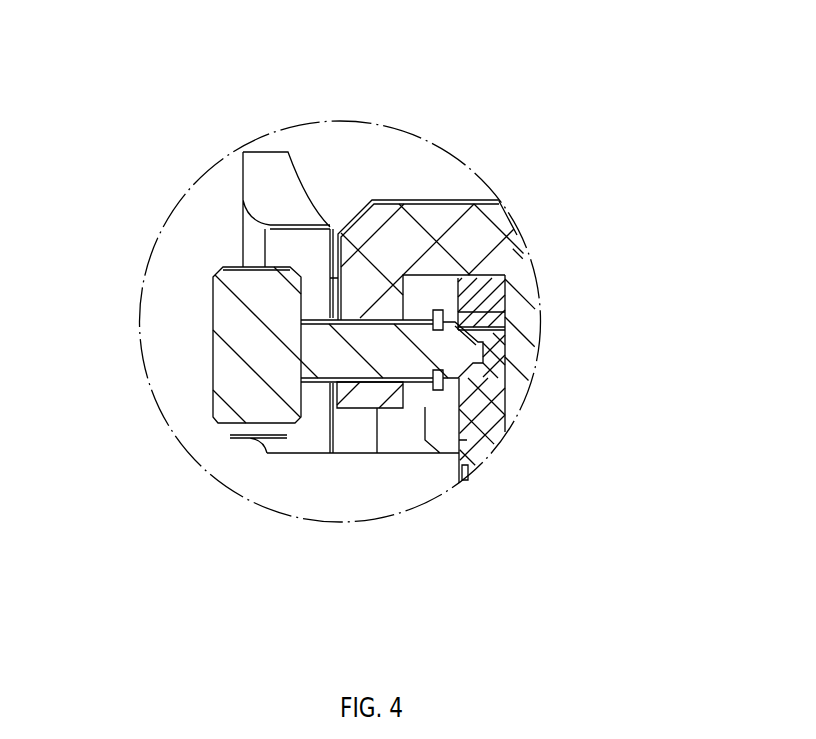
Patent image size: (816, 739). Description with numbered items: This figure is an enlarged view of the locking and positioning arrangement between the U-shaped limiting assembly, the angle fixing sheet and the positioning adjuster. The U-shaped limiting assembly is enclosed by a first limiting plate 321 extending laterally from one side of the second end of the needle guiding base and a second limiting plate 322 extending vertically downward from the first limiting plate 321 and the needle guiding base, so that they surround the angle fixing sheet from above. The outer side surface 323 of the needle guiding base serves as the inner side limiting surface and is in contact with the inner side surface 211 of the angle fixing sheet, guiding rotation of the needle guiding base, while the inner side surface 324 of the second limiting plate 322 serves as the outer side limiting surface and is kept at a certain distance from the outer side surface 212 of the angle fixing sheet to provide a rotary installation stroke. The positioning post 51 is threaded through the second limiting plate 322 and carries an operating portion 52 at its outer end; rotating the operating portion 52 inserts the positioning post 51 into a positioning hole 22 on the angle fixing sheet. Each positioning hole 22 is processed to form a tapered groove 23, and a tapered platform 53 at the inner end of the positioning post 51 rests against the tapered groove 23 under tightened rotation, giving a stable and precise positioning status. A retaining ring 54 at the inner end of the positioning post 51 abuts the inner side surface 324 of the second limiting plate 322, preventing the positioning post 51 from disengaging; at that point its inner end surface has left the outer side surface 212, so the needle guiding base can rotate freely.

The outer side surface 212 is at (447, 280).
The first limiting plate 321 is at (435, 230).
The second limiting plate 322 is at (362, 290).
The inner side surface 324 is at (339, 231).
The inner side surface 211 is at (503, 298).
The tapered groove 23 is at (505, 283).
The outer side surface 323 is at (505, 345).
The positioning hole 22 is at (491, 350).
The operating portion 52 is at (257, 415).
The retaining ring 54 is at (445, 400).
The tapered platform 53 is at (465, 380).
The positioning post 51 is at (498, 388).